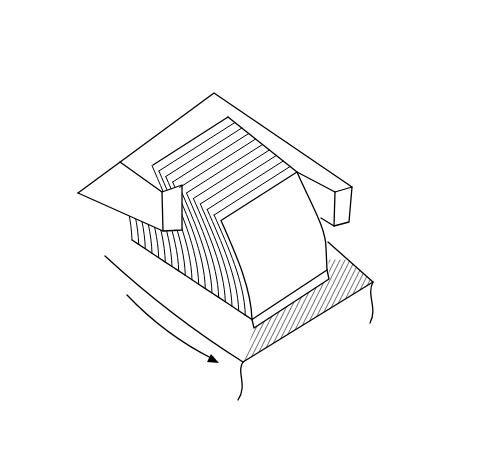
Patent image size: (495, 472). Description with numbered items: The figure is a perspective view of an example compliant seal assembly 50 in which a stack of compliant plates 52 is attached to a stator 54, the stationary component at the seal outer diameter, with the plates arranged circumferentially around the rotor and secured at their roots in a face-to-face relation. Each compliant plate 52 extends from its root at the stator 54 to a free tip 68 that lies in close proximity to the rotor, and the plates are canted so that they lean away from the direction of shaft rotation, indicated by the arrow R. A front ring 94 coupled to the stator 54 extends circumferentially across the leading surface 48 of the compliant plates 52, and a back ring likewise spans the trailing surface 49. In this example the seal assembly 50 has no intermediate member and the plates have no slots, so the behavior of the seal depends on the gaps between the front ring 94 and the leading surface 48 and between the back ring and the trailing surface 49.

The compliant seal assembly 50 is at (411, 142).
The stator 54 is at (173, 132).
The front ring 94 is at (88, 197).
The compliant plates 52 is at (297, 180).
The leading surface 48 is at (138, 244).
The trailing surface 49 is at (331, 233).
The tip 68 is at (298, 288).